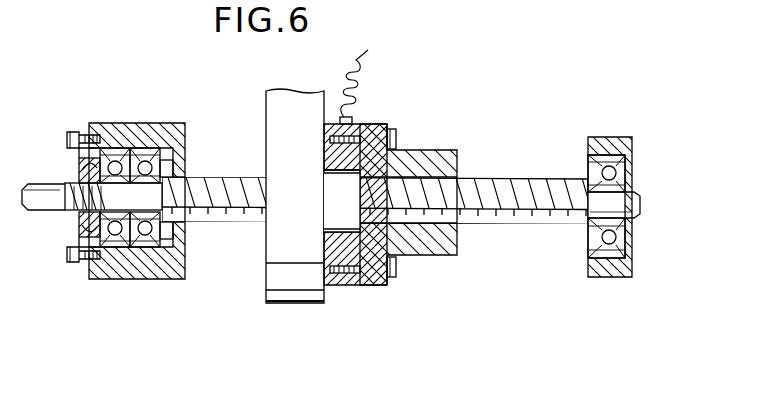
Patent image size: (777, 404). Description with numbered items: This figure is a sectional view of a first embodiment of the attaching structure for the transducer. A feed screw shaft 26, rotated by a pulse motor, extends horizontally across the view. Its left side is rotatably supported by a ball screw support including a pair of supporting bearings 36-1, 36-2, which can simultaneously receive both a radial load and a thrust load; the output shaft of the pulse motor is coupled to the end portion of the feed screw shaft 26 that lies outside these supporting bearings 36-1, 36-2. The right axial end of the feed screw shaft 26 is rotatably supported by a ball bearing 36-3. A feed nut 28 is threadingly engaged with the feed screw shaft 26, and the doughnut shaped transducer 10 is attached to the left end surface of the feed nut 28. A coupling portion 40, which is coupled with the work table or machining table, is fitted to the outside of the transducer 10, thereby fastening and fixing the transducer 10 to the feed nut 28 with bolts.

The transducer 10 is at (355, 122).
The feed screw shaft 26 is at (496, 187).
The feed nut 28 is at (437, 248).
The supporting bearing 36-1 is at (113, 243).
The supporting bearing 36-2 is at (147, 243).
The ball bearing 36-3 is at (603, 248).
The coupling portion 40 is at (303, 291).